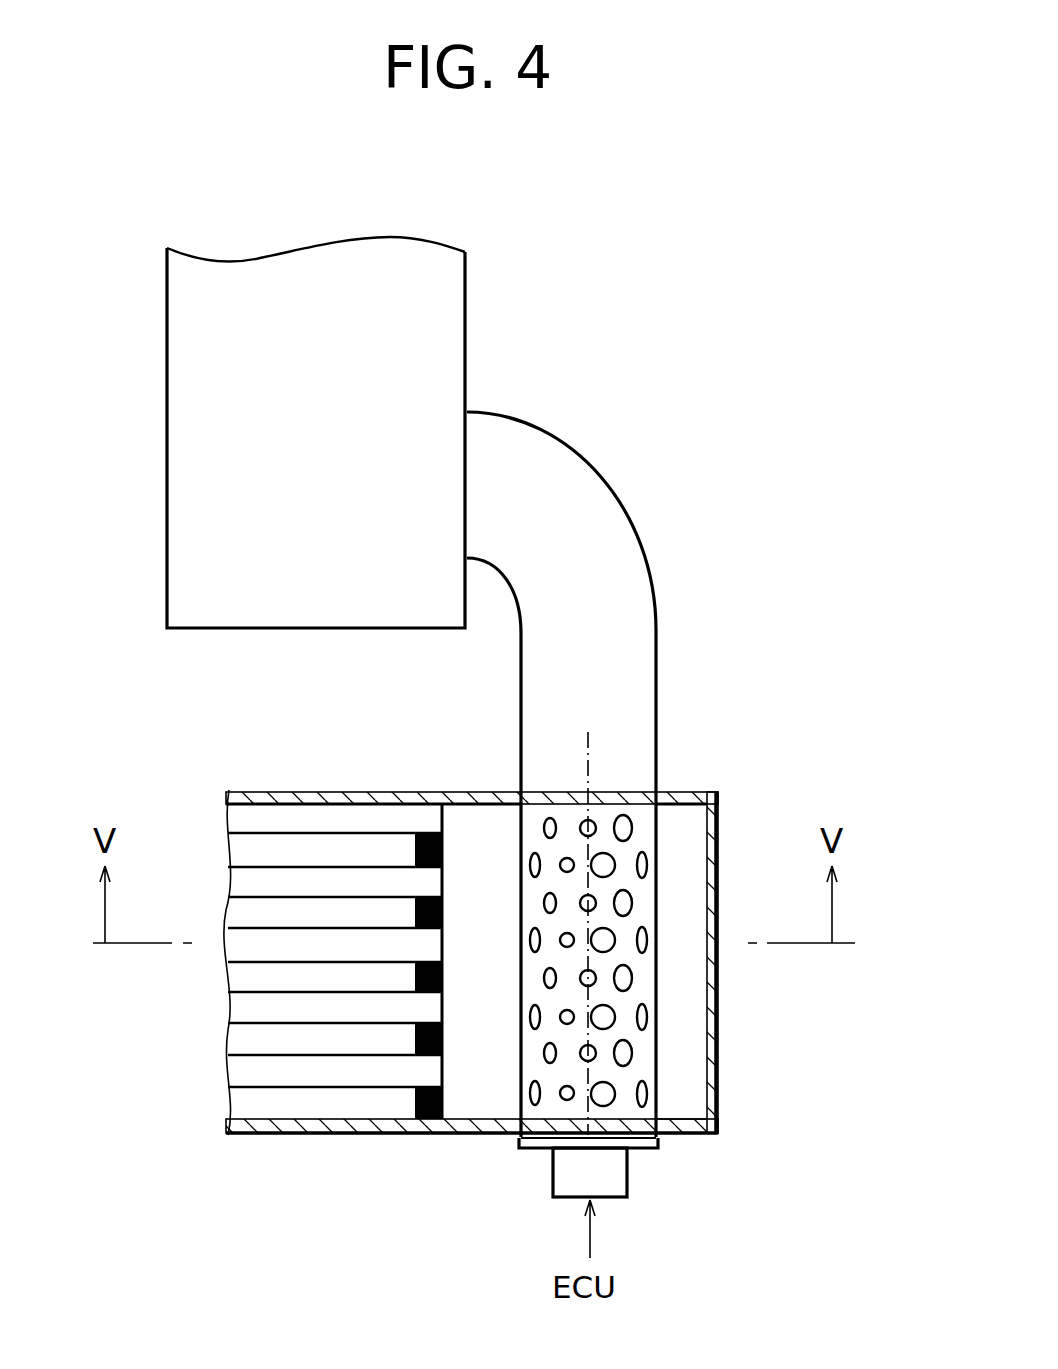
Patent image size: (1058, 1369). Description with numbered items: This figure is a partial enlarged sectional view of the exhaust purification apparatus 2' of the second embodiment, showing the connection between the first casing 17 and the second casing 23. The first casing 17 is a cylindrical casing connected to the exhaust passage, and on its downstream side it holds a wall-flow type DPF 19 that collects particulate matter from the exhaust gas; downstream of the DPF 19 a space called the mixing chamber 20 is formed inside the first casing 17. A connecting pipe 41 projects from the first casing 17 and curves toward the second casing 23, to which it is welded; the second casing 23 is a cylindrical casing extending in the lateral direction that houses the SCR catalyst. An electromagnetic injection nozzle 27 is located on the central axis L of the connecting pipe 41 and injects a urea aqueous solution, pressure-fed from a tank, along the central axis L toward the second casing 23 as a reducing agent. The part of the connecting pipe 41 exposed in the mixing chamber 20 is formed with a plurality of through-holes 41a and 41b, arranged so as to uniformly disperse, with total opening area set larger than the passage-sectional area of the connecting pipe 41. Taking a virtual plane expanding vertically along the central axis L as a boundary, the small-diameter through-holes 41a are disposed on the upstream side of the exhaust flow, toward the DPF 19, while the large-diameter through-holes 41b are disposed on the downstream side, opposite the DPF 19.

The exhaust purification apparatus 2' is at (615, 703).
The connecting pipe 41 is at (617, 591).
The small-diameter through-holes 41a is at (548, 902).
The large-diameter through-holes 41b is at (613, 1018).
The injection nozzle 27 is at (613, 1177).
The second casing 23 is at (207, 480).
The first casing 17 is at (283, 1124).
The DPF 19 is at (360, 1100).
The mixing chamber 20 is at (481, 1075).
The central axis L is at (590, 763).